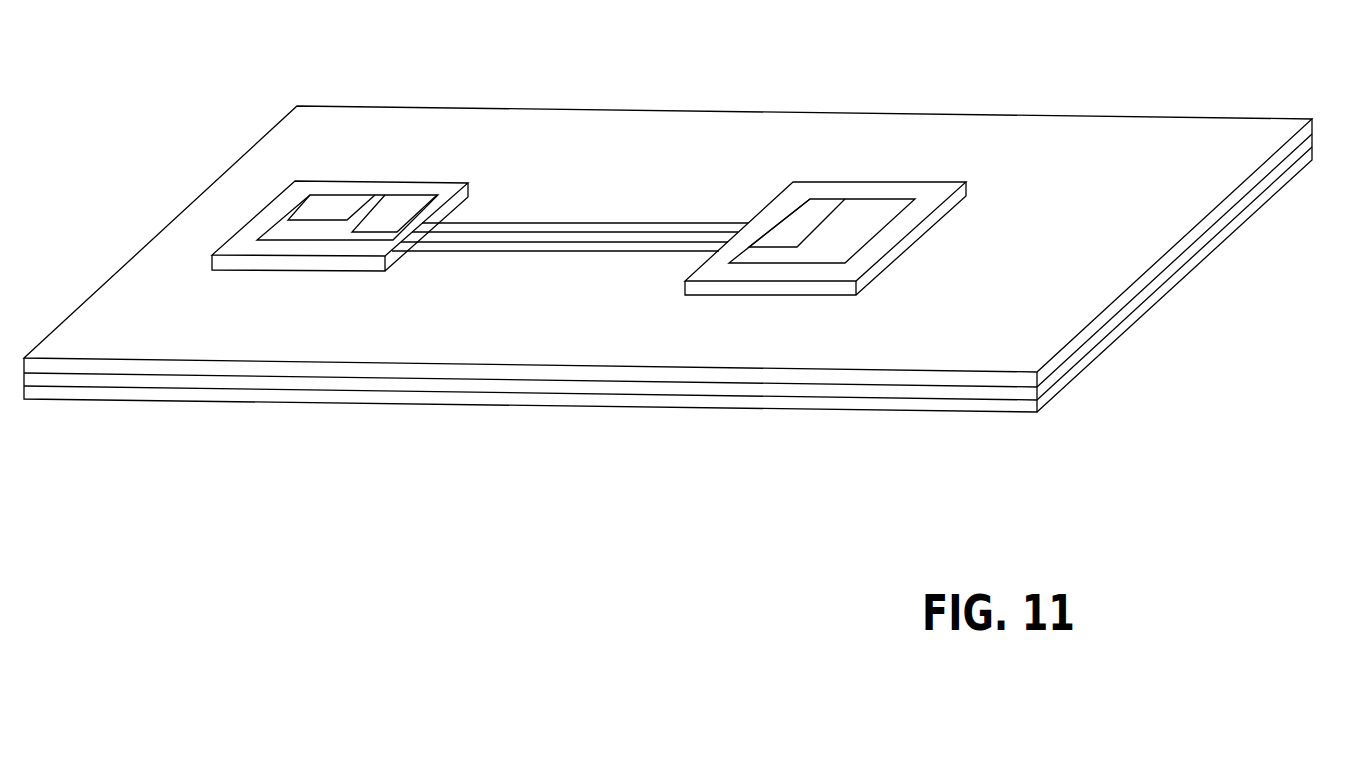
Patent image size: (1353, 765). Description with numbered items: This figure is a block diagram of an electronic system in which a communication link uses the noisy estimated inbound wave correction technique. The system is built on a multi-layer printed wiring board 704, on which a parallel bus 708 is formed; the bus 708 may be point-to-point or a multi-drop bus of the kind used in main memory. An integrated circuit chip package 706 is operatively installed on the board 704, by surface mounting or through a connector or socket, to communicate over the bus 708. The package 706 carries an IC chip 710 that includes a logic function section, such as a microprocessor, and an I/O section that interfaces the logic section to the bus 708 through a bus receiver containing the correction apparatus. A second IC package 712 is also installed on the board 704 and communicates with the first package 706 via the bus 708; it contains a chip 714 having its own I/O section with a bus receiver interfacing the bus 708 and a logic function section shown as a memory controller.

The multi-layer printed wiring board 704 is at (875, 108).
The integrated circuit chip package 706 is at (393, 182).
The parallel bus 708 is at (585, 221).
The IC chip 710 is at (277, 220).
The second IC package 712 is at (922, 182).
The chip 714 is at (822, 199).